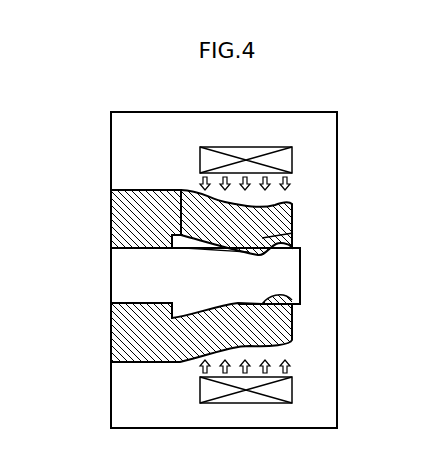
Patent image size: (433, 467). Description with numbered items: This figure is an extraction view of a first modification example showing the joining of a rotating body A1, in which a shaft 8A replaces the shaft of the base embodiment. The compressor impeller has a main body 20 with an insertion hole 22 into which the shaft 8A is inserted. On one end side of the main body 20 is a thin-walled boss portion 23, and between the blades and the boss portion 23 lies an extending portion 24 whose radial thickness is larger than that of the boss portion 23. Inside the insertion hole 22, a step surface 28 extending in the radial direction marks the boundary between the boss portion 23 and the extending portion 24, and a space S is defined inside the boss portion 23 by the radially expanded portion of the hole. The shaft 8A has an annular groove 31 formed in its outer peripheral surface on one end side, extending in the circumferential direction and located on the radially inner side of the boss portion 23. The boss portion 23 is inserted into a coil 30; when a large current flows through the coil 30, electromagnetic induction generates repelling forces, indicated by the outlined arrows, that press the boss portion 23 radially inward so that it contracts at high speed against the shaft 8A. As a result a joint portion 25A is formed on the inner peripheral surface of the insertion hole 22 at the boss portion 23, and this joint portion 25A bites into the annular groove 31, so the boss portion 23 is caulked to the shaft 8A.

The rotating body A1 is at (156, 167).
The shaft 8A is at (125, 270).
The main body 20 is at (145, 364).
The insertion hole 22 is at (127, 296).
The boss portion 23 is at (293, 198).
The extending portion 24 is at (111, 184).
The joint portion 25A is at (300, 303).
The step surface 28 is at (181, 190).
The coil 30 is at (248, 404).
The annular groove 31 is at (300, 250).
The space S is at (293, 233).